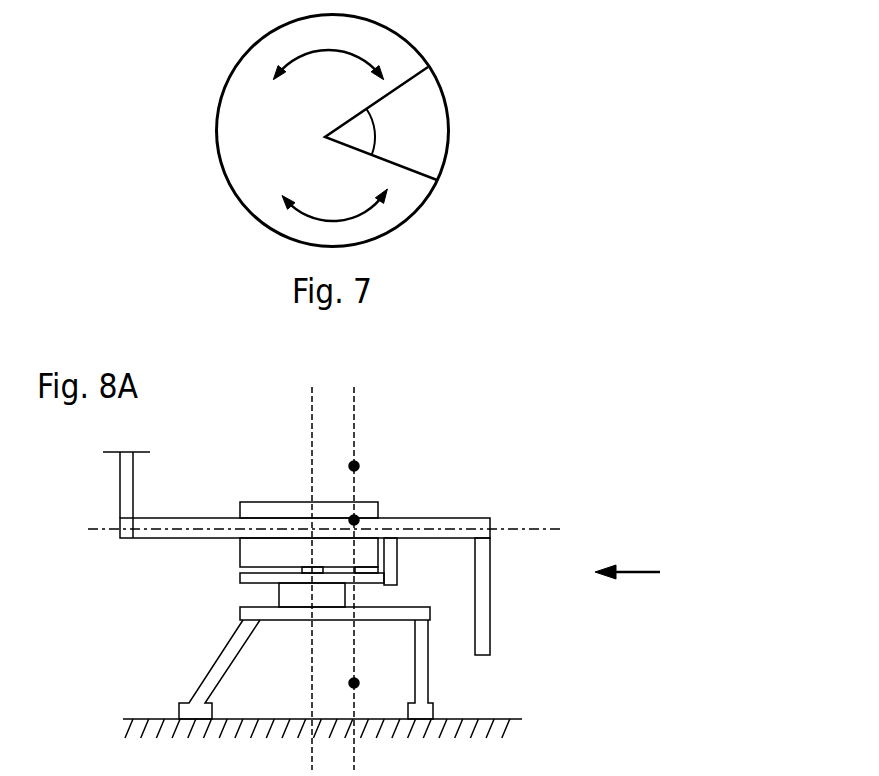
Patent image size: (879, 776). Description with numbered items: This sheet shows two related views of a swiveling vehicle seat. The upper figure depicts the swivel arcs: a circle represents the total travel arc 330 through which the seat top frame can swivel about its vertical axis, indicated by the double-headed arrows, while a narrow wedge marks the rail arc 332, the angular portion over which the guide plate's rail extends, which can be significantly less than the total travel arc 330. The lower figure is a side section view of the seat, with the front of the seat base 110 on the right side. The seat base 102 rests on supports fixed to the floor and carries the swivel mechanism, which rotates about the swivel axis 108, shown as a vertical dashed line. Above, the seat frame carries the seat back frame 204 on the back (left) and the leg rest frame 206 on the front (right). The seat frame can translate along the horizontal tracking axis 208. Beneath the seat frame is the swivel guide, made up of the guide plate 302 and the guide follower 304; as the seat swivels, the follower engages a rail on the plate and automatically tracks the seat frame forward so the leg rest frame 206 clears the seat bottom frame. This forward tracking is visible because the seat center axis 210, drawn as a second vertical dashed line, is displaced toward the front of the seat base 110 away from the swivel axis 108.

In FIG. 7, the total travel arc 330 is at (330, 135).
In FIG. 7, the rail arc 332 is at (381, 123).
In FIG. 8A, the seat base 102 is at (222, 663).
In FIG. 8A, the swivel axis 108 is at (310, 678).
In FIG. 8A, the front of the seat base 110 is at (648, 573).
In FIG. 8A, the seat back frame 204 is at (127, 488).
In FIG. 8A, the leg rest frame 206 is at (482, 602).
In FIG. 8A, the tracking axis 208 is at (525, 527).
In FIG. 8A, the seat center axis 210 is at (355, 433).
In FIG. 8A, the guide plate 302 is at (242, 578).
In FIG. 8A, the guide follower 304 is at (390, 558).